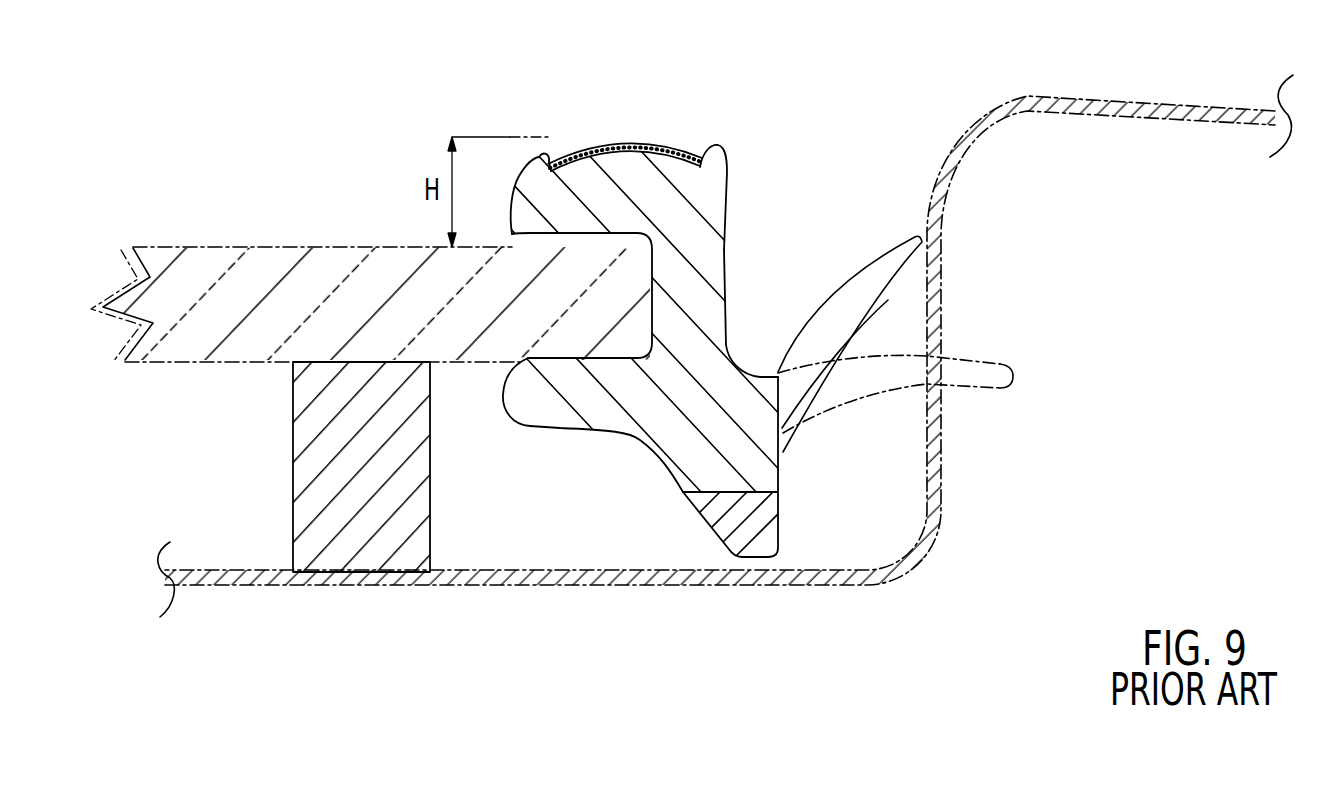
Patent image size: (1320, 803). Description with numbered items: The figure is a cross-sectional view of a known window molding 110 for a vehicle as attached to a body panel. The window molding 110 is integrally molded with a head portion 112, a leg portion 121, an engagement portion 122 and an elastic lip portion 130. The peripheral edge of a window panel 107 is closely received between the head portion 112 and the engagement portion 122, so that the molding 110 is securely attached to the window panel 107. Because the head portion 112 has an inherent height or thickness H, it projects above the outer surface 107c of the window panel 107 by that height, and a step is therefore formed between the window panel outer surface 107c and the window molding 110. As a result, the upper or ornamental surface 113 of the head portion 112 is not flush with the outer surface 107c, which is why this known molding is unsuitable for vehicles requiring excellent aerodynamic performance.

The window panel 107 is at (240, 293).
The outer surface of the window panel 107c is at (345, 247).
The window molding 110 is at (636, 283).
The head portion 112 is at (610, 193).
The ornamental surface 113 is at (634, 137).
The leg portion 121 is at (703, 266).
The engagement portion 122 is at (548, 417).
The elastic lip portion 130 is at (863, 305).